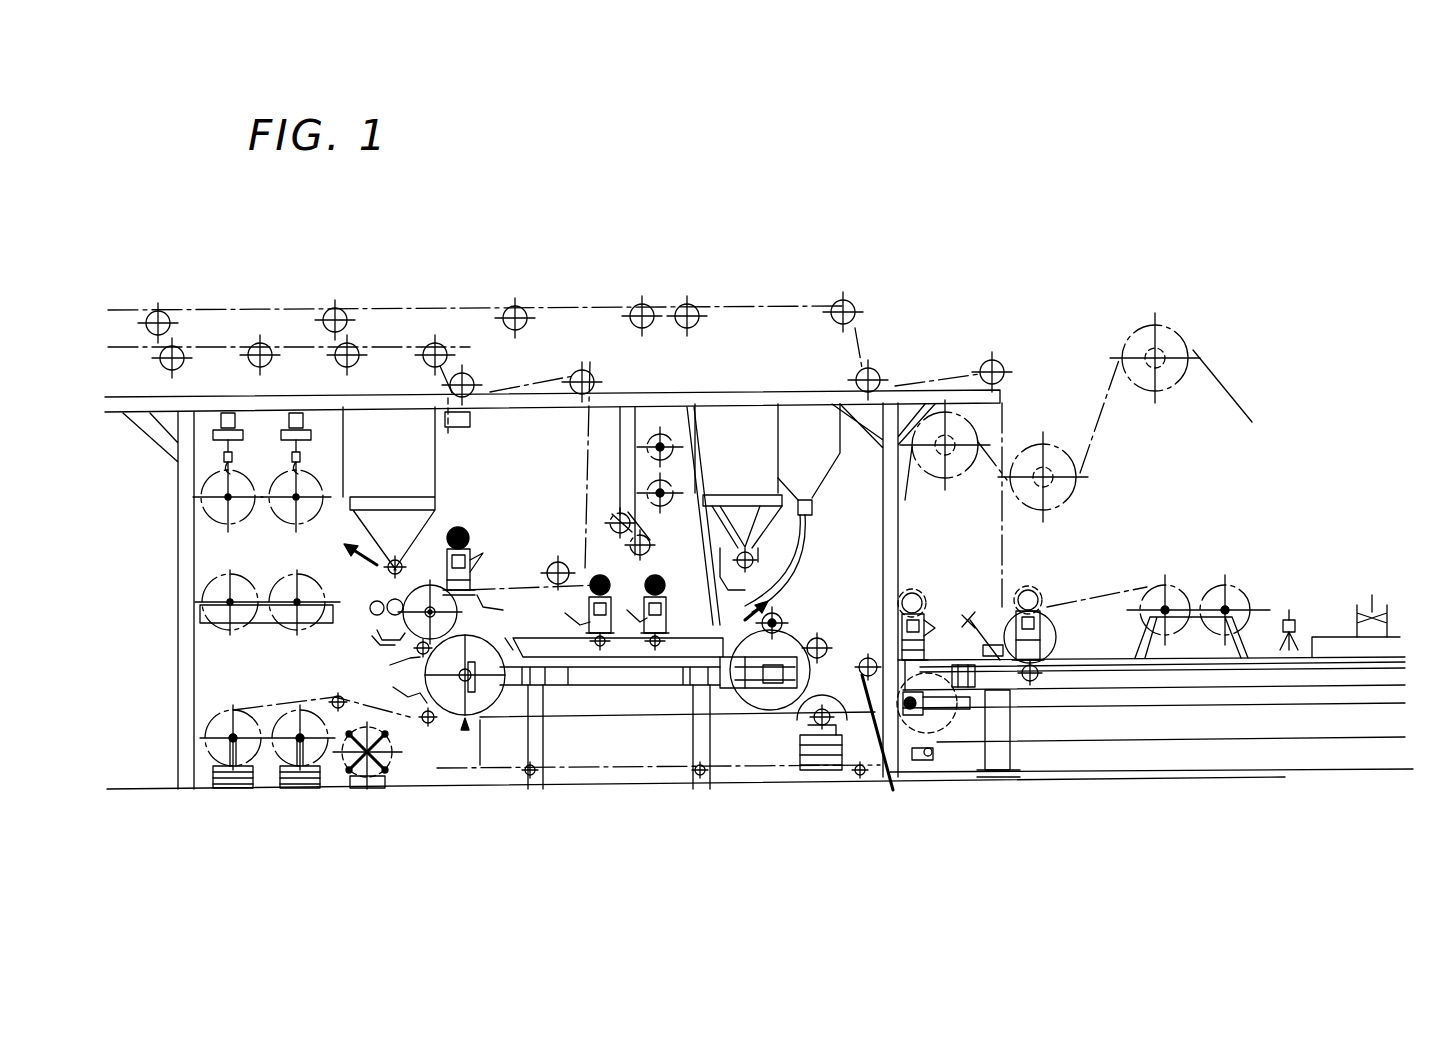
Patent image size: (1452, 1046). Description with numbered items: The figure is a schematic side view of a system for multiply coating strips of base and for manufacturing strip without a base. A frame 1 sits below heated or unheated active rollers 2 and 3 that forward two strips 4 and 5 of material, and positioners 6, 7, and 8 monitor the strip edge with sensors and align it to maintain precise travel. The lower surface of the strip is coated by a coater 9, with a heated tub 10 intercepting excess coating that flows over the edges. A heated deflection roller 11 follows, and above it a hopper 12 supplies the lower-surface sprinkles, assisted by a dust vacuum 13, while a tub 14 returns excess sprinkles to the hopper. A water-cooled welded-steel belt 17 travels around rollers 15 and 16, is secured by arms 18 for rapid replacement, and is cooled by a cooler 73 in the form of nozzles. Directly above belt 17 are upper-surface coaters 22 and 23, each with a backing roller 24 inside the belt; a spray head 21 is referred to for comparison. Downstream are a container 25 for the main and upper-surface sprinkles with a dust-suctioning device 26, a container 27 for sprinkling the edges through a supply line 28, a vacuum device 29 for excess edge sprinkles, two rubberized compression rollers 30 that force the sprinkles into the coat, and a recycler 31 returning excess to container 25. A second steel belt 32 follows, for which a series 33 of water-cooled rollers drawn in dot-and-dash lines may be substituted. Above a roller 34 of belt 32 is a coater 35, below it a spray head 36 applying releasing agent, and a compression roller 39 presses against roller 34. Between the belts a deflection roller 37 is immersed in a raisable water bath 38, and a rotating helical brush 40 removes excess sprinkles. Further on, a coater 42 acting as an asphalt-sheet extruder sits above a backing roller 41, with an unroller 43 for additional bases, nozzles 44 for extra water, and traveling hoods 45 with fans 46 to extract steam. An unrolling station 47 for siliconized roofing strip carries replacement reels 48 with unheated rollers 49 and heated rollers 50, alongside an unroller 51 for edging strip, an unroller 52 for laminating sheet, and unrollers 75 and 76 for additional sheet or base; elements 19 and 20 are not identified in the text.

The frame 1 is at (755, 392).
The active rollers 2 is at (333, 312).
The active rollers 3 is at (155, 362).
The strip 4 is at (422, 307).
The strip 5 is at (125, 347).
The positioner 6 is at (546, 444).
The positioner 7 is at (563, 562).
The positioner 8 is at (993, 360).
The coater 9 is at (471, 546).
The heated tub 10 is at (503, 610).
The heated deflection roller 11 is at (451, 612).
The hopper 12 is at (393, 430).
The dust vacuum 13 is at (344, 550).
The tub 14 is at (377, 642).
The roller 15 is at (452, 712).
The roller 16 is at (765, 705).
The water-cooled welded-steel belt 17 is at (507, 720).
The arms 18 is at (525, 785).
The deflector 19 is at (395, 697).
The roller support 20 is at (413, 733).
The spray head 21 is at (479, 730).
The coater 22 is at (590, 650).
The coater 23 is at (632, 650).
The backing roller 24 is at (640, 660).
The container 25 is at (752, 437).
The device 26 is at (767, 600).
The container 27 is at (792, 455).
The supply line 28 is at (795, 545).
The vacuum device 29 is at (687, 433).
The rubberized compression rollers 30 is at (780, 618).
The recycler 31 is at (885, 742).
The steel belt 32 is at (1193, 745).
The series of water-cooled rollers 33 is at (1060, 450).
The roller 34 is at (943, 717).
The coater 35 is at (922, 605).
The spray head 36 is at (940, 760).
The deflection roller 37 is at (800, 737).
The water bath 38 is at (817, 777).
The rubberized compression roller 39 is at (840, 635).
The rotating helical brush 40 is at (868, 700).
The backing roller 41 is at (1032, 664).
The coater 42 is at (1042, 620).
The unroller 43 is at (1173, 600).
The nozzles 44 is at (1292, 617).
The traveling hoods 45 is at (1325, 647).
The fans 46 is at (1387, 607).
The unrolling station 47 is at (217, 590).
The removable replacement reels 48 is at (205, 487).
The supply and deflection rollers 49 is at (372, 600).
The supply and deflection rollers 50 is at (367, 620).
The unroller 51 is at (620, 517).
The unroller 52 is at (672, 448).
The cooler 73 is at (585, 690).
The unroller 75 is at (205, 748).
The unroller 76 is at (333, 783).